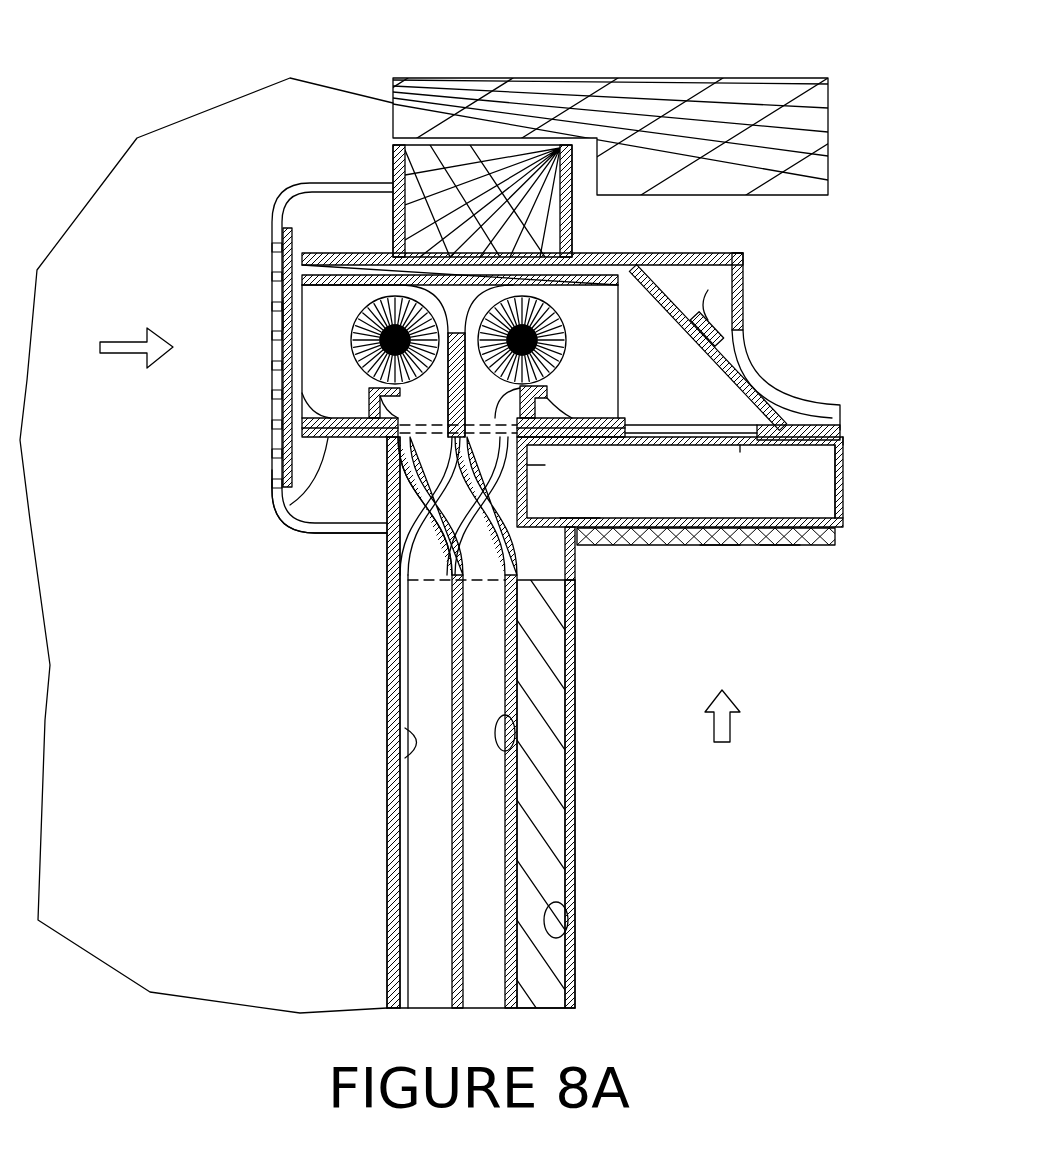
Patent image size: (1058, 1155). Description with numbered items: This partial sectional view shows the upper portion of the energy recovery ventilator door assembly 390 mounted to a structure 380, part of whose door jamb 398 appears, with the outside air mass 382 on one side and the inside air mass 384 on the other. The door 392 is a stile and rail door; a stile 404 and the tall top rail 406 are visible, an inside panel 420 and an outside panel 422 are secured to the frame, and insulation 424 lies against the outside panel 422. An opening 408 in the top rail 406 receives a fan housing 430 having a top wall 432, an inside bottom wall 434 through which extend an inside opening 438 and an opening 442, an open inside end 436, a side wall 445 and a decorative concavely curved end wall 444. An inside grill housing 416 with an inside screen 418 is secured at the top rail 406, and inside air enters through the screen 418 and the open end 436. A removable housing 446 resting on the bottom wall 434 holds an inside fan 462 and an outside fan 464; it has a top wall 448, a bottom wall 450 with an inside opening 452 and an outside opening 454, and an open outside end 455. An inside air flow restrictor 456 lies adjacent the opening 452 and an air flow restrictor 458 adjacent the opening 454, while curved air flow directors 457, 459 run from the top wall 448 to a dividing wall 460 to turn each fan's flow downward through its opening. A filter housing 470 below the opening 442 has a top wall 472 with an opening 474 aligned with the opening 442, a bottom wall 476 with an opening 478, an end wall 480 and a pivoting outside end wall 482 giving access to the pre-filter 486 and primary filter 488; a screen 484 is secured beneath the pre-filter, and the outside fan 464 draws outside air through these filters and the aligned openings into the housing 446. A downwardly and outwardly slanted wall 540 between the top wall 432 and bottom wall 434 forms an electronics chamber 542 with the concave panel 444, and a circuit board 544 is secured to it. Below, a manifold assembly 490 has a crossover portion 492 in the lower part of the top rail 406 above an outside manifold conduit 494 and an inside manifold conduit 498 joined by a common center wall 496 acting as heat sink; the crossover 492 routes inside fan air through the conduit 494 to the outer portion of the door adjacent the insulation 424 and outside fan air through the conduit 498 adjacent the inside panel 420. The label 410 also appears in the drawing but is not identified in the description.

The structure 380 is at (186, 110).
The outside air mass 382 is at (852, 862).
The inside air mass 384 is at (238, 657).
The energy recovery ventilator door assembly 390 is at (654, 46).
The door 392 is at (596, 664).
The door jamb portion 398 is at (830, 146).
The stile 404 is at (568, 920).
The top rail 406 is at (405, 170).
The opening 408 is at (590, 253).
The lower connector 410 is at (577, 560).
The inside grill housing 416 is at (300, 185).
The inside screen 418 is at (283, 242).
The inside panel 420 is at (390, 818).
The outside panel 422 is at (577, 782).
The insulation 424 is at (537, 852).
The fan housing 430 is at (329, 248).
The top wall 432 is at (678, 253).
The inside bottom wall 434 is at (278, 510).
The open inside end 436 is at (285, 320).
The inside opening 438 is at (397, 442).
The opening 442 is at (755, 425).
The concavely curved end wall 444 is at (745, 282).
The side wall 445 is at (722, 265).
The removable housing 446 is at (338, 298).
The top wall 448 is at (367, 253).
The bottom wall 450 is at (285, 400).
The inside opening 452 is at (409, 399).
The outside opening 454 is at (532, 392).
The open outside end 455 is at (620, 378).
The inside air flow restrictor 456 is at (378, 406).
The curved air flow director 457 is at (453, 290).
The air flow restrictor 458 is at (528, 466).
The curved air flow director 459 is at (470, 290).
The dividing wall 460 is at (460, 290).
The inside fan 462 is at (350, 338).
The outside fan 464 is at (566, 345).
The filter housing 470 is at (852, 428).
The top wall 472 is at (846, 445).
The opening 474 is at (747, 446).
The bottom wall 476 is at (845, 532).
The opening 478 is at (770, 546).
The end wall 480 is at (604, 490).
The pivoting outside end wall 482 is at (846, 498).
The screen 484 is at (720, 546).
The pre-filter 486 is at (690, 530).
The primary filter 488 is at (712, 505).
The manifold assembly 490 is at (533, 543).
The crossover portion 492 is at (410, 503).
The outside manifold conduit 494 is at (515, 548).
The common center wall 496 is at (455, 880).
The inside manifold conduit 498 is at (445, 542).
The slanted wall 540 is at (765, 382).
The electronics chamber 542 is at (712, 303).
The circuit board 544 is at (722, 335).